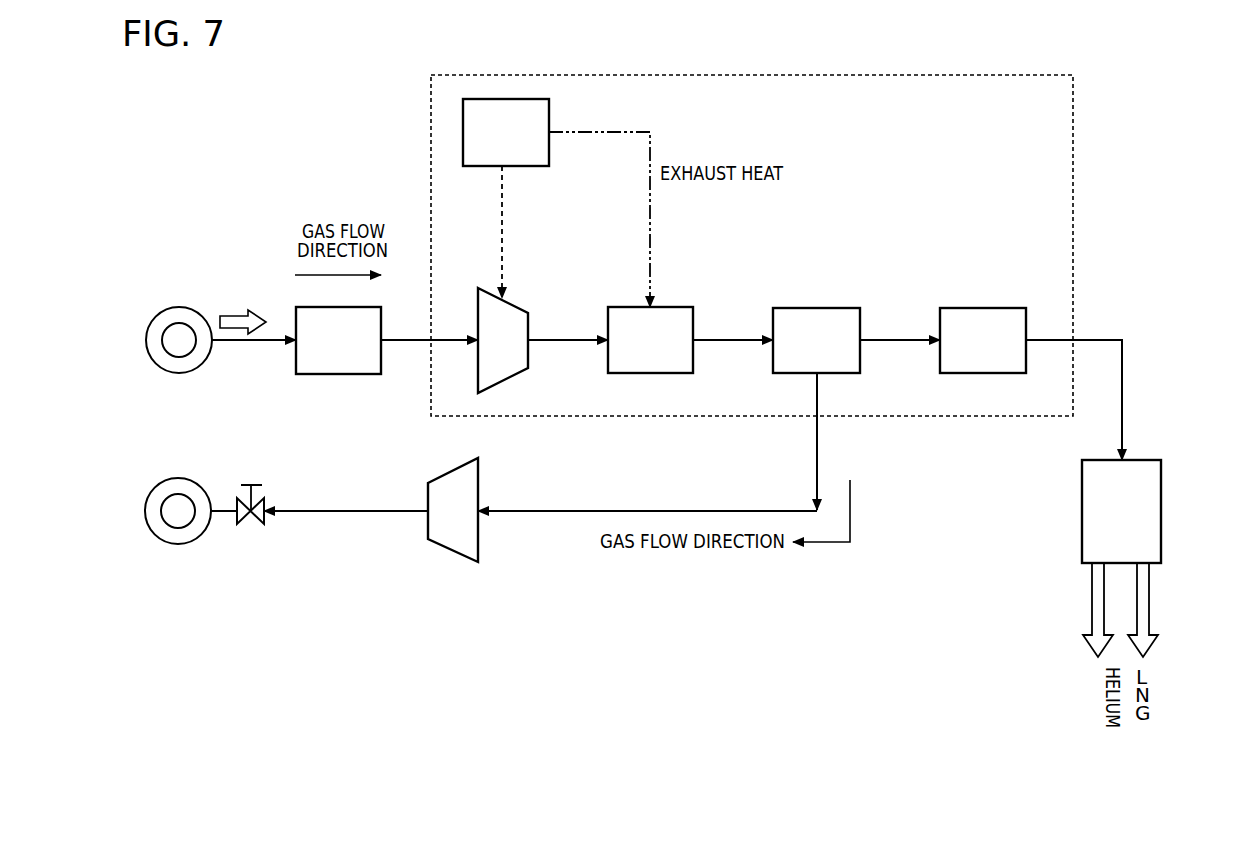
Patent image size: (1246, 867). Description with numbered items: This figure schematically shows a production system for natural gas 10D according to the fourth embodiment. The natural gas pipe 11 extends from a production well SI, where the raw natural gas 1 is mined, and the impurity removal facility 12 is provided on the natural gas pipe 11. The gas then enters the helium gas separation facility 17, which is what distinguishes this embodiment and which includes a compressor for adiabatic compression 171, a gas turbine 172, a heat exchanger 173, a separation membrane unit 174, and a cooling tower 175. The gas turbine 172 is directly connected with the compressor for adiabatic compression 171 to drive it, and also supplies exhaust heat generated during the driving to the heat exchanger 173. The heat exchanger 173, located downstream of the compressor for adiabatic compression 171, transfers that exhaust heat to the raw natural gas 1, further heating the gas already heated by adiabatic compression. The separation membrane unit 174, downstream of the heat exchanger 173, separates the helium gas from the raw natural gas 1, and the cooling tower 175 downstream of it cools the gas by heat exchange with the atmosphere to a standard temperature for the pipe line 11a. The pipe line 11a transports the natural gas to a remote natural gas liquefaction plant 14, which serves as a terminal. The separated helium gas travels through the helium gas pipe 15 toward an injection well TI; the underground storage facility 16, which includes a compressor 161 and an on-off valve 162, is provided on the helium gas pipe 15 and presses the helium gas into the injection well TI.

The raw natural gas 1 is at (240, 305).
The natural gas pipe 11 is at (247, 343).
The pipe line 11a is at (1107, 340).
The impurity removal facility 12 is at (339, 374).
The natural gas liquefaction plant 14 is at (1161, 508).
The helium gas pipe 15 is at (817, 450).
The underground storage facility 16 is at (330, 540).
The compressor 161 is at (448, 548).
The on-off valve 162 is at (254, 524).
The helium gas separation facility 17 is at (1073, 195).
The compressor for adiabatic compression 171 is at (510, 301).
The gas turbine 172 is at (549, 113).
The heat exchanger 173 is at (676, 307).
The separation membrane unit 174 is at (817, 308).
The cooling tower 175 is at (983, 308).
The production system for natural gas 10D is at (1108, 112).
The production well SI is at (178, 373).
The injection well TI is at (178, 544).